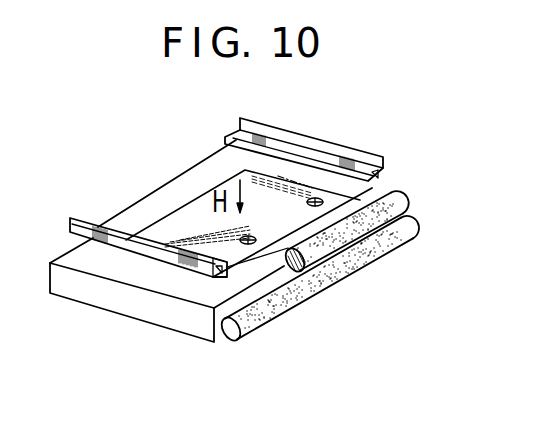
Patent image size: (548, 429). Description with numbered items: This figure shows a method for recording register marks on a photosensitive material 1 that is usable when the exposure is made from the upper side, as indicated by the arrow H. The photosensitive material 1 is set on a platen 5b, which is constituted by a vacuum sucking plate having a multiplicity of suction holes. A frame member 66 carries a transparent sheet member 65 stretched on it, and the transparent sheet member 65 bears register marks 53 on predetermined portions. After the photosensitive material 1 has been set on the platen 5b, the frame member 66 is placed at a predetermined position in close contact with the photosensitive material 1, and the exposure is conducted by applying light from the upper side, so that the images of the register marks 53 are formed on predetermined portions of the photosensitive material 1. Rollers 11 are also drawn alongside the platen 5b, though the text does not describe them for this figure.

The photosensitive material 1 is at (197, 284).
The platen 5b is at (101, 297).
The rollers 11 is at (367, 323).
The register marks 53 is at (254, 236).
The transparent sheet member 65 is at (177, 176).
The frame member 66 is at (97, 222).